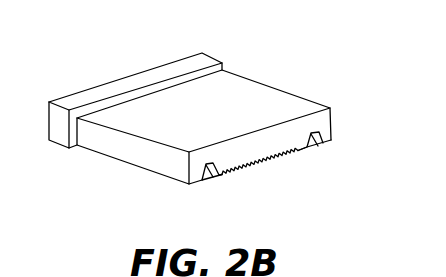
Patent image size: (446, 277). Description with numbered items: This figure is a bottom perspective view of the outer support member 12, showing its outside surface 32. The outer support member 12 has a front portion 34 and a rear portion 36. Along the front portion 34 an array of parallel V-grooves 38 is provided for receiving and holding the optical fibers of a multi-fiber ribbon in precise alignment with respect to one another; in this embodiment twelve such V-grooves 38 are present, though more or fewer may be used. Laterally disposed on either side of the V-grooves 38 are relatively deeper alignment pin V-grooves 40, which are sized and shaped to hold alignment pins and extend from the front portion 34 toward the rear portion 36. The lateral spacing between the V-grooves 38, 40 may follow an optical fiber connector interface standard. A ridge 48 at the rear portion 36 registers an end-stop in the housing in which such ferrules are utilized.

The outer support member 12 is at (226, 26).
The outside surface 32 is at (240, 88).
The front portion 34 is at (322, 88).
The rear portion 36 is at (50, 160).
The V-grooves 38 is at (270, 173).
The alignment pin V-grooves 40 is at (211, 179).
The ridge 48 is at (132, 82).